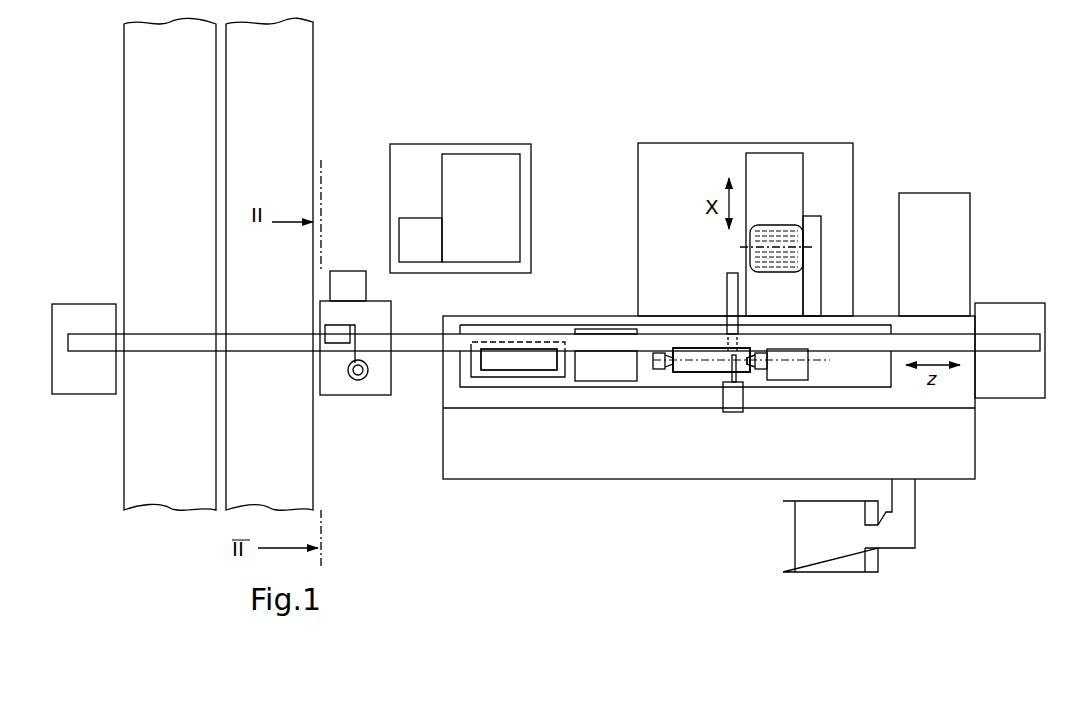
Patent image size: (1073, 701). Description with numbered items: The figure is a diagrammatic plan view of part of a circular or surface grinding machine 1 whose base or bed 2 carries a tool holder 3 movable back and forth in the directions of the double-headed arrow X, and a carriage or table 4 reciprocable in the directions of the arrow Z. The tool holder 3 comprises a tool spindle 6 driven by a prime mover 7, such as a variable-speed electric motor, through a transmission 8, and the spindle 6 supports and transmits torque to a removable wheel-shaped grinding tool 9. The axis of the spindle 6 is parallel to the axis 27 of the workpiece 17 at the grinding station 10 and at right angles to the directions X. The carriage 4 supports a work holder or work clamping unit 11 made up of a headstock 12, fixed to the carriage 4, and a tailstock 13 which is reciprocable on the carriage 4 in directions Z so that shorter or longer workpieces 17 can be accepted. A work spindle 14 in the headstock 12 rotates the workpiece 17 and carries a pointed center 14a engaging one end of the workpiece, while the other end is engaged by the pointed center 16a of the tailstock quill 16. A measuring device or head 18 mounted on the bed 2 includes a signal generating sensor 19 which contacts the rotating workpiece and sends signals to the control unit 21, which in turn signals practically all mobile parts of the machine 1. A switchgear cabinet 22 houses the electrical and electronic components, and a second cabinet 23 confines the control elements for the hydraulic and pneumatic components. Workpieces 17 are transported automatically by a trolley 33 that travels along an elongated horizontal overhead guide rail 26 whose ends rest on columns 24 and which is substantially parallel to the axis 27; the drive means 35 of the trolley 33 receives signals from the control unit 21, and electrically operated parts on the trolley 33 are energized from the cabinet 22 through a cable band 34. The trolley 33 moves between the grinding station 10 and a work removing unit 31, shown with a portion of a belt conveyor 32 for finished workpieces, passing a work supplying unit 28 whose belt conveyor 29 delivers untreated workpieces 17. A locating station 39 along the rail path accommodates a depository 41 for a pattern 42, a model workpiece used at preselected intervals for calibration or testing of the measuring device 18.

The grinding machine 1 is at (872, 120).
The bed 2 is at (963, 398).
The tool holder 3 is at (783, 170).
The carriage 4 is at (877, 375).
The tool spindle 6 is at (717, 252).
The prime mover 7 is at (780, 233).
The transmission 8 is at (815, 232).
The grinding tool 9 is at (735, 300).
The grinding station 10 is at (708, 315).
The work holder 11 is at (610, 415).
The headstock 12 is at (592, 368).
The tailstock 13 is at (808, 372).
The work spindle 14 is at (650, 372).
The pointed center 14a is at (662, 365).
The tailstock quill 16 is at (772, 368).
The pointed center 16a is at (752, 368).
The workpiece 17 is at (697, 370).
The measuring device 18 is at (735, 405).
The signal generating sensor 19 is at (720, 356).
The control unit 21 is at (848, 555).
The switchgear cabinet 22 is at (958, 265).
The second cabinet 23 is at (530, 172).
The column 24 is at (95, 315).
The guide rail 26 is at (998, 333).
The axis 27 is at (683, 360).
The work supplying unit 28 is at (275, 367).
The belt conveyor 29 is at (290, 64).
The work removing unit 31 is at (165, 365).
The belt conveyor 32 is at (155, 68).
The trolley 33 is at (370, 310).
The cable band 34 is at (335, 340).
The drive means 35 is at (341, 275).
The locating station 39 is at (527, 382).
The depository 41 is at (478, 378).
The pattern 42 is at (498, 370).